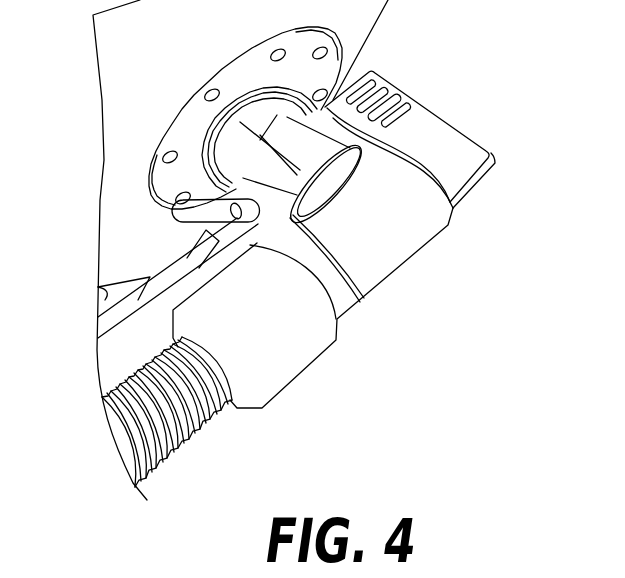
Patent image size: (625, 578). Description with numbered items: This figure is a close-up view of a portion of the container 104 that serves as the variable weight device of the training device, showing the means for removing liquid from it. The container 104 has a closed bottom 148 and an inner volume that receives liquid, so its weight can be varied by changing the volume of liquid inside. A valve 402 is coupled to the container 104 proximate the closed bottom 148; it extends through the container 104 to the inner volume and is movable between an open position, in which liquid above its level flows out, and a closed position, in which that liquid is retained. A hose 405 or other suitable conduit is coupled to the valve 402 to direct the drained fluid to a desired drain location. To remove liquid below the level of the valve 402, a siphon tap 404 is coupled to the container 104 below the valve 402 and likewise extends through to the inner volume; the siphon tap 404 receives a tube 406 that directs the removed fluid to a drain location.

The container 104 is at (156, 48).
The closed bottom 148 is at (98, 292).
The valve 402 is at (395, 241).
The siphon tap 404 is at (215, 221).
The hose 405 is at (212, 421).
The tube 406 is at (132, 282).